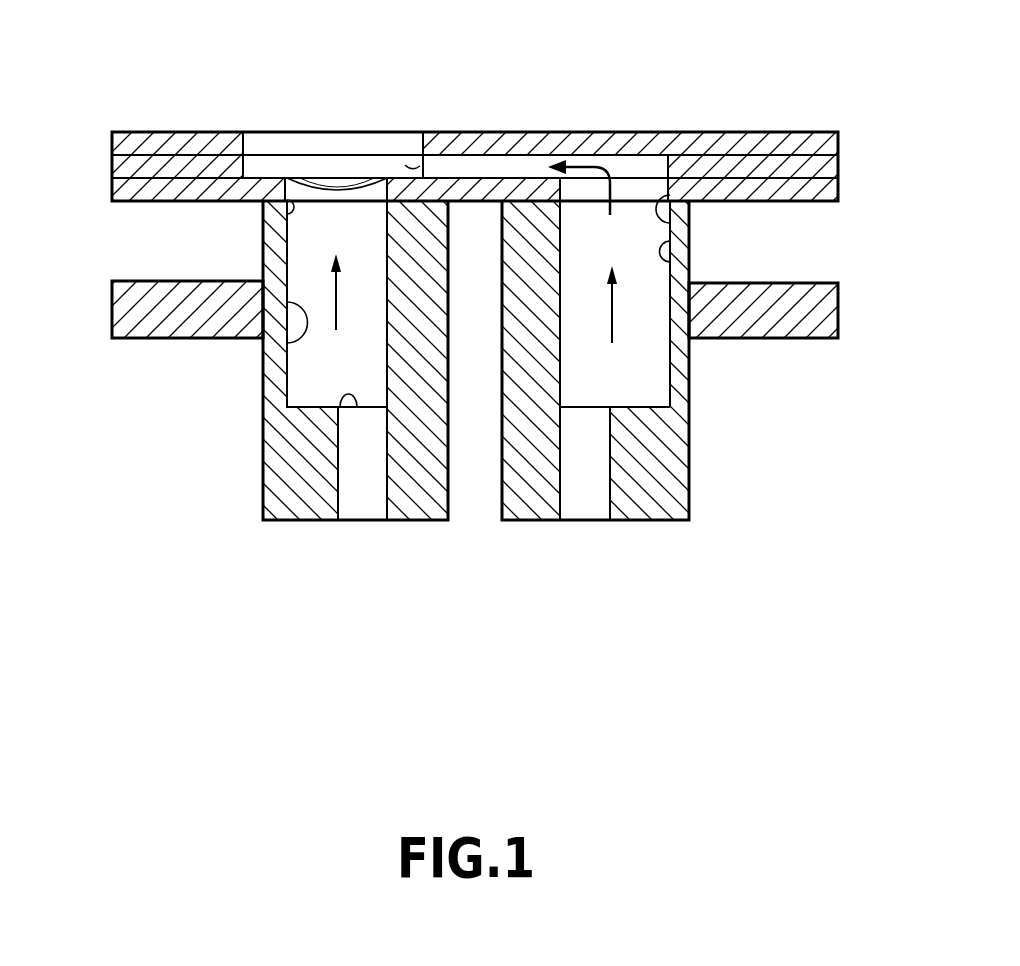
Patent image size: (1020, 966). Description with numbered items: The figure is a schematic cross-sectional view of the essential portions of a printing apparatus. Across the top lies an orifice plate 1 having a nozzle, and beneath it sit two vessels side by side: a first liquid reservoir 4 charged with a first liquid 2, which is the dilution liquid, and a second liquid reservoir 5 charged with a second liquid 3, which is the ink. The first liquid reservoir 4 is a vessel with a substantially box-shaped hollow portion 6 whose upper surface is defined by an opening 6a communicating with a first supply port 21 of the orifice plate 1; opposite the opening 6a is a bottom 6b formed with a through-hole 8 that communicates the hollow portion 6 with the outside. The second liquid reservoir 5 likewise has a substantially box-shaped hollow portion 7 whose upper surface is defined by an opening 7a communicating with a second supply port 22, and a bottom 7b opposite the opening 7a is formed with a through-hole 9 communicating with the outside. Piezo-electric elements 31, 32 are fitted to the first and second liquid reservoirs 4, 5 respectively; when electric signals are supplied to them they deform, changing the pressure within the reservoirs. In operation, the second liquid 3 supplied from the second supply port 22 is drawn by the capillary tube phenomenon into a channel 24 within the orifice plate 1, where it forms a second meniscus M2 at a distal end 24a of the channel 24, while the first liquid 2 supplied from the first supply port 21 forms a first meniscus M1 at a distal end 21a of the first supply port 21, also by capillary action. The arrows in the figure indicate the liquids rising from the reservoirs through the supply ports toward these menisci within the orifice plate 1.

The orifice plate 1 is at (475, 136).
The first liquid 2 is at (303, 382).
The second liquid 3 is at (640, 370).
The first liquid reservoir 4 is at (280, 467).
The second liquid reservoir 5 is at (670, 465).
The hollow portion 6 is at (287, 346).
The opening 6a is at (287, 212).
The bottom 6b is at (348, 405).
The hollow portion 7 is at (689, 262).
The opening 7a is at (689, 221).
The bottom 7b is at (562, 410).
The through-hole 8 is at (383, 483).
The through-hole 9 is at (608, 475).
The first supply port 21 is at (327, 203).
The distal end of first supply port 21a is at (292, 175).
The second supply port 22 is at (627, 200).
The channel 24 is at (505, 165).
The distal end of channel 24a is at (420, 158).
The piezo-electric element 31 is at (130, 308).
The piezo-electric element 32 is at (817, 308).
The first meniscus M1 is at (330, 170).
The second meniscus M2 is at (420, 166).